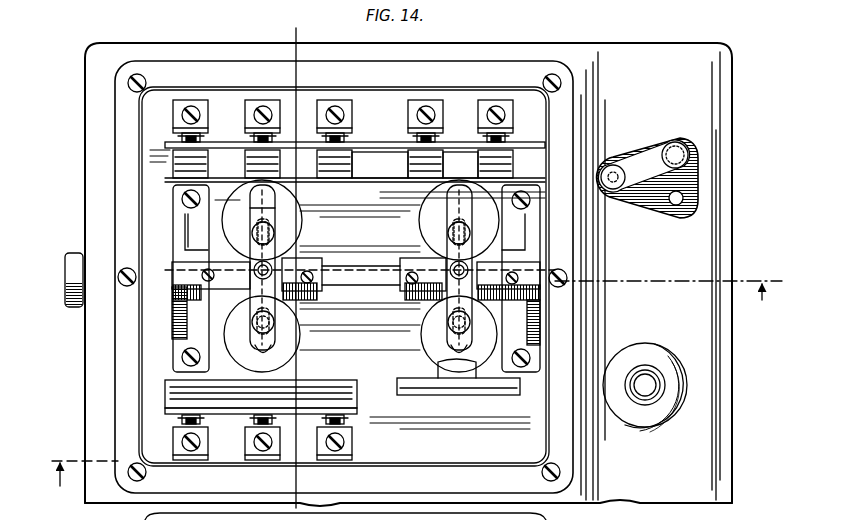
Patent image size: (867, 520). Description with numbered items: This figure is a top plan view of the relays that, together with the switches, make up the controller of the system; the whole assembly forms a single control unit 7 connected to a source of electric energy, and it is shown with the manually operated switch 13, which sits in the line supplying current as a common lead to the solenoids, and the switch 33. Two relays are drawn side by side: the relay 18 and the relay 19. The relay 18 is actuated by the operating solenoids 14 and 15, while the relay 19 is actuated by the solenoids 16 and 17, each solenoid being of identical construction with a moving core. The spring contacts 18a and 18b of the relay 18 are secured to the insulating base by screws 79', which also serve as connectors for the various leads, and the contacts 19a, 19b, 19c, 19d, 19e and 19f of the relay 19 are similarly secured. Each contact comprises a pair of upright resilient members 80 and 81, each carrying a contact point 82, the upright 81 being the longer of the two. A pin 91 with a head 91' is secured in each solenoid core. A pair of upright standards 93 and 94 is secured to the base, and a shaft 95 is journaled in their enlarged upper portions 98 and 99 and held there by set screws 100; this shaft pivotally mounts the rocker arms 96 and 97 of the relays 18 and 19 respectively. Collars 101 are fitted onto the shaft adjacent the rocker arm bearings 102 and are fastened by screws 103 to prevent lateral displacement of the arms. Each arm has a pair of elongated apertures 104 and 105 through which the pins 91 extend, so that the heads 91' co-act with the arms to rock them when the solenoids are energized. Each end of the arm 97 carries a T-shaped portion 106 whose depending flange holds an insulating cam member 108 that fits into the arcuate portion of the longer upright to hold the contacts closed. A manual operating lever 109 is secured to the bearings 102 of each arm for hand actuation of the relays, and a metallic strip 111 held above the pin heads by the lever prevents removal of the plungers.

The control unit 7 is at (83, 168).
The manually operated switch 13 is at (688, 175).
The operating solenoid 14 is at (428, 345).
The operating solenoid 15 is at (423, 225).
The operating solenoid 16 is at (298, 32).
The operating solenoid 17 is at (298, 336).
The relay 18 is at (514, 308).
The spring contact 18a is at (426, 98).
The spring contact 18b is at (500, 98).
The relay 19 is at (155, 305).
The contact 19a is at (183, 462).
The contact 19b is at (255, 462).
The contact 19c is at (322, 462).
The contact 19d is at (191, 98).
The contact 19e is at (263, 98).
The contact 19f is at (330, 98).
The switch 33 is at (656, 386).
The screw 79' is at (343, 276).
The upright resilient member 80 is at (186, 136).
The upright resilient member 81 is at (183, 157).
The contact point 82 is at (197, 143).
The pin 91 is at (348, 267).
The pin head 91' is at (362, 270).
The upright standard 93 is at (537, 240).
The upright standard 94 is at (178, 240).
The shaft 95 is at (364, 276).
The rocker arm 96 is at (462, 394).
The rocker arm 97 is at (272, 357).
The enlarged upper portion 98 is at (515, 262).
The enlarged upper portion 99 is at (180, 318).
The set screw 100 is at (205, 268).
The collar 101 is at (296, 262).
The rocker arm bearing 102 is at (295, 258).
The screw 103 is at (315, 292).
The elongated aperture 104 is at (272, 213).
The elongated aperture 105 is at (256, 350).
The T-shaped portion 106 is at (356, 180).
The cam member 108 is at (406, 156).
The manual operating lever 109 is at (277, 298).
The metallic strip 111 is at (256, 246).